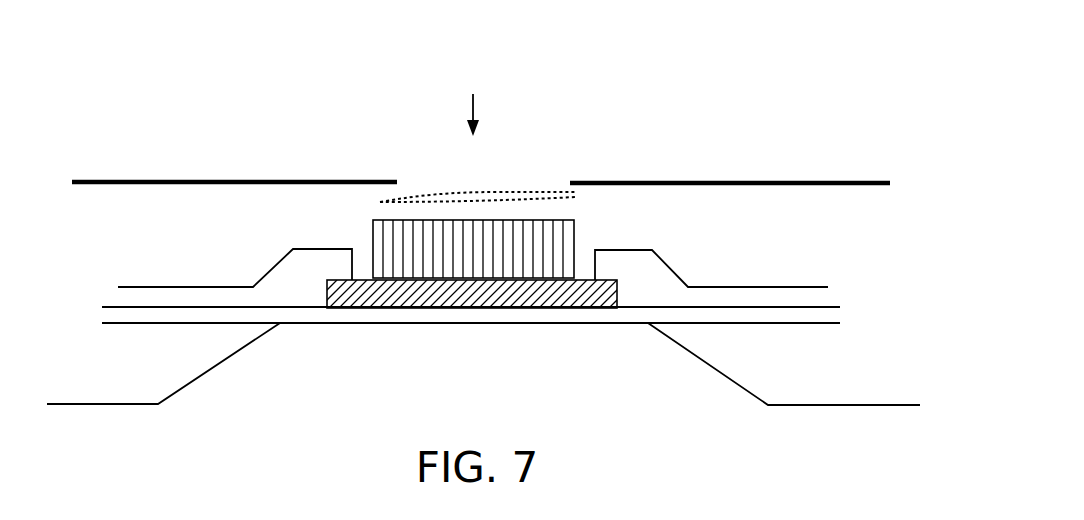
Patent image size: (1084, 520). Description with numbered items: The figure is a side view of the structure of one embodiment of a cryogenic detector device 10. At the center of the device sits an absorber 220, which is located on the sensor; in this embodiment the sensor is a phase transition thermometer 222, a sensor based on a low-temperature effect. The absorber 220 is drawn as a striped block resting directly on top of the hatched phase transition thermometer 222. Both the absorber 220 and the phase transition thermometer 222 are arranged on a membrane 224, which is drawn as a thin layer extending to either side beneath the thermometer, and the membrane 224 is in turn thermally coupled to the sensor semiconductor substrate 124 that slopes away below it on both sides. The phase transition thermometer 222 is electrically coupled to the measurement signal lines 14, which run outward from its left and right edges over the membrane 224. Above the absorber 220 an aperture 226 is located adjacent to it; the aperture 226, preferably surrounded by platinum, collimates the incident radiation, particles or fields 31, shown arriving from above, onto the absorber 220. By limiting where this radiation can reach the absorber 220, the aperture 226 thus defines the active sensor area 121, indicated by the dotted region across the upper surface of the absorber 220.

The cryogenic detector device 10 is at (398, 46).
The incident radiation, particles or fields 31 is at (473, 103).
The aperture 226 is at (492, 182).
The active sensor area 121 is at (552, 193).
The absorber 220 is at (457, 258).
The phase transition thermometer 222 is at (457, 302).
The measurement signal lines 14 is at (318, 249).
The membrane 224 is at (110, 313).
The sensor semiconductor substrate 124 is at (187, 351).